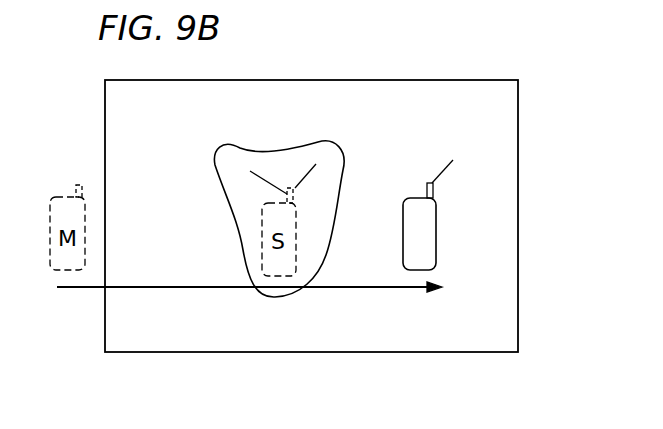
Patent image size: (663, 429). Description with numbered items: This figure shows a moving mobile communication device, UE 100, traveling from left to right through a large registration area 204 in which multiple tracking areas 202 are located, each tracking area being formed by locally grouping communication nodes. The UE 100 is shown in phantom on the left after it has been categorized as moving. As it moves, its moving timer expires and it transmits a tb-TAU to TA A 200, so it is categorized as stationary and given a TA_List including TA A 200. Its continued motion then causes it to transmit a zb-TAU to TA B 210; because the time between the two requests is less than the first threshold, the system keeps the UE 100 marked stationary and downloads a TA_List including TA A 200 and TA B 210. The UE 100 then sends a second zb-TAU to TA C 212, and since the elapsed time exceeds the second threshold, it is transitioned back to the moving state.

The UE 100 is at (403, 232).
The TA A 200 is at (237, 150).
The tracking areas 202 is at (184, 124).
The large registration area 204 is at (365, 80).
The TA B 210 is at (318, 147).
The TA C 212 is at (453, 152).